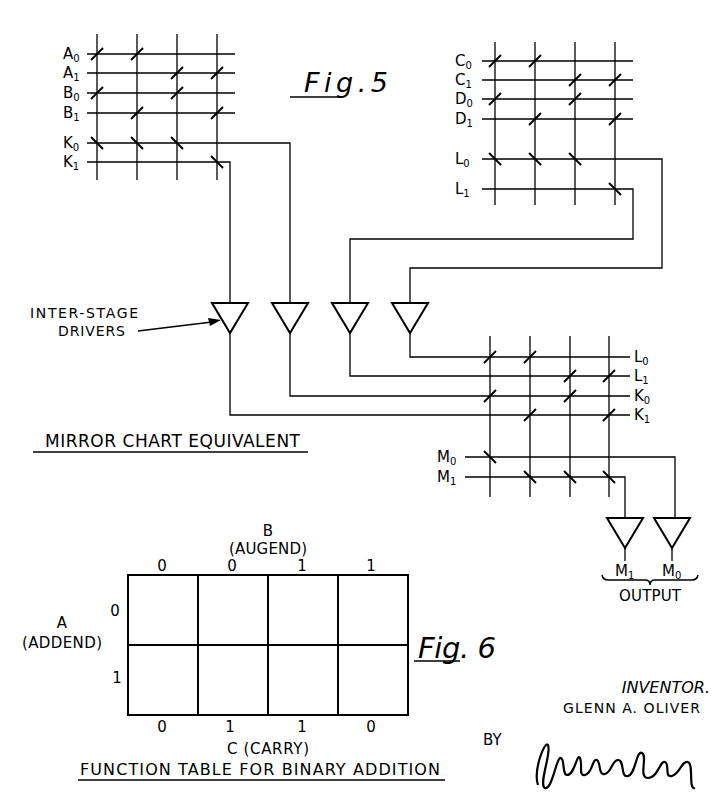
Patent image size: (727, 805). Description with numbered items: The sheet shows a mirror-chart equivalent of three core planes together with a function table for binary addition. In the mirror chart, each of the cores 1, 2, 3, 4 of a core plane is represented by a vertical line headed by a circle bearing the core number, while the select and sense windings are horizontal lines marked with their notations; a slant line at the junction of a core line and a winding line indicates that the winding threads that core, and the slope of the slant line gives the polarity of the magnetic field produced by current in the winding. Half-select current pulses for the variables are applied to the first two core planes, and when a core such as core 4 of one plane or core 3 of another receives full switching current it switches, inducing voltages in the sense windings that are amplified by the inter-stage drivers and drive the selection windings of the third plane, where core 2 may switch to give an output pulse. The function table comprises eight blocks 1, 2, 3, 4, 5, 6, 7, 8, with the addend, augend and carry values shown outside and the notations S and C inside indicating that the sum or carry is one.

In FIG. 5, the core 1 is at (296, 256).
In FIG. 6, the core 1 is at (163, 610).
In FIG. 5, the core 2 is at (336, 256).
In FIG. 6, the core 2 is at (233, 610).
In FIG. 5, the core 3 is at (376, 256).
In FIG. 6, the core 3 is at (303, 610).
In FIG. 5, the core 4 is at (416, 256).
In FIG. 6, the core 4 is at (373, 610).
In FIG. 6, the block 5 is at (163, 680).
In FIG. 6, the block 6 is at (233, 680).
In FIG. 6, the block 7 is at (303, 680).
In FIG. 6, the block 8 is at (373, 680).